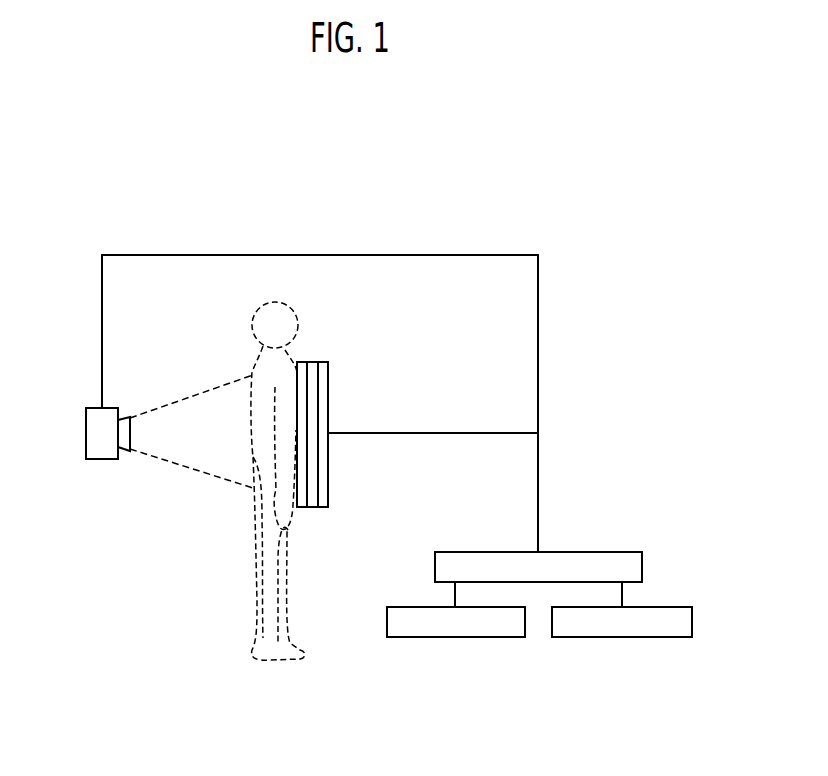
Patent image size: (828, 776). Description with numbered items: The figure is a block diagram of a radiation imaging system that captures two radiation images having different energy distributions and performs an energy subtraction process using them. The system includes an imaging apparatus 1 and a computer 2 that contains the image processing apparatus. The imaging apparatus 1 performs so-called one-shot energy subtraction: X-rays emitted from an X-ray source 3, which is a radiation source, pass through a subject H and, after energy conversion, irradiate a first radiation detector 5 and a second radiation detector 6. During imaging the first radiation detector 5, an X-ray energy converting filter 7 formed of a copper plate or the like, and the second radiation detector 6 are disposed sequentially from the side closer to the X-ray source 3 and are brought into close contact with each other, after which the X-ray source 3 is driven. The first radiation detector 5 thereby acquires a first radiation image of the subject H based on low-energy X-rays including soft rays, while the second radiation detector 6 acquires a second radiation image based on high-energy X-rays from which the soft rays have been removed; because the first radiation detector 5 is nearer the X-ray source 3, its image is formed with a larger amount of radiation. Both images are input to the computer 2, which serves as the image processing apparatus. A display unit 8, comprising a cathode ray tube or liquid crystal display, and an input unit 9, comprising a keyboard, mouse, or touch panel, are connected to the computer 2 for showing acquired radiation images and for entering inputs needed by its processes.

The imaging apparatus 1 is at (128, 228).
The computer 2 is at (644, 563).
The X-ray source 3 is at (86, 431).
The first radiation detector 5 is at (303, 362).
The second radiation detector 6 is at (326, 362).
The X-ray energy converting filter 7 is at (310, 508).
The display unit 8 is at (487, 637).
The input unit 9 is at (655, 637).
The subject H is at (258, 304).